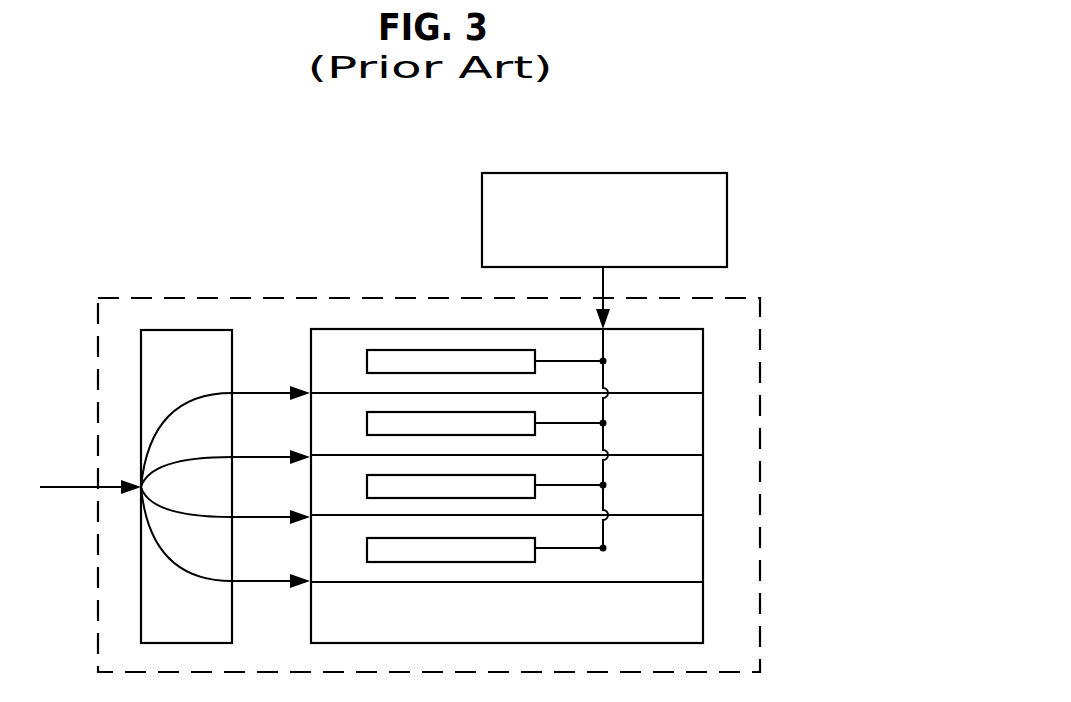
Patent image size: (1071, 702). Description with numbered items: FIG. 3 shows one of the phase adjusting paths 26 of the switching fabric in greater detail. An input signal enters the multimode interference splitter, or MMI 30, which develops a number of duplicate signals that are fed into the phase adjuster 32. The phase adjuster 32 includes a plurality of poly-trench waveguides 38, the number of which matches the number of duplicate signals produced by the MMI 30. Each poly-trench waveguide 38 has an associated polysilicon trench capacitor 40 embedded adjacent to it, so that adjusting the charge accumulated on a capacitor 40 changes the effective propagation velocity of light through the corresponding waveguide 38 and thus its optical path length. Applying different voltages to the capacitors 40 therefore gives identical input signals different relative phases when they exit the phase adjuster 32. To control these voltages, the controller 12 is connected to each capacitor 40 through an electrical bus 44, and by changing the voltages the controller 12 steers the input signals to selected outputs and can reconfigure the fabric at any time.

The controller 12 is at (738, 165).
The phase adjusting path 26 is at (780, 475).
The MMI 30 is at (215, 312).
The phase adjuster 32 is at (722, 310).
The poly-trench waveguide 38 is at (676, 394).
The polysilicon trench capacitor 40 is at (367, 362).
The electrical bus 44 is at (606, 344).